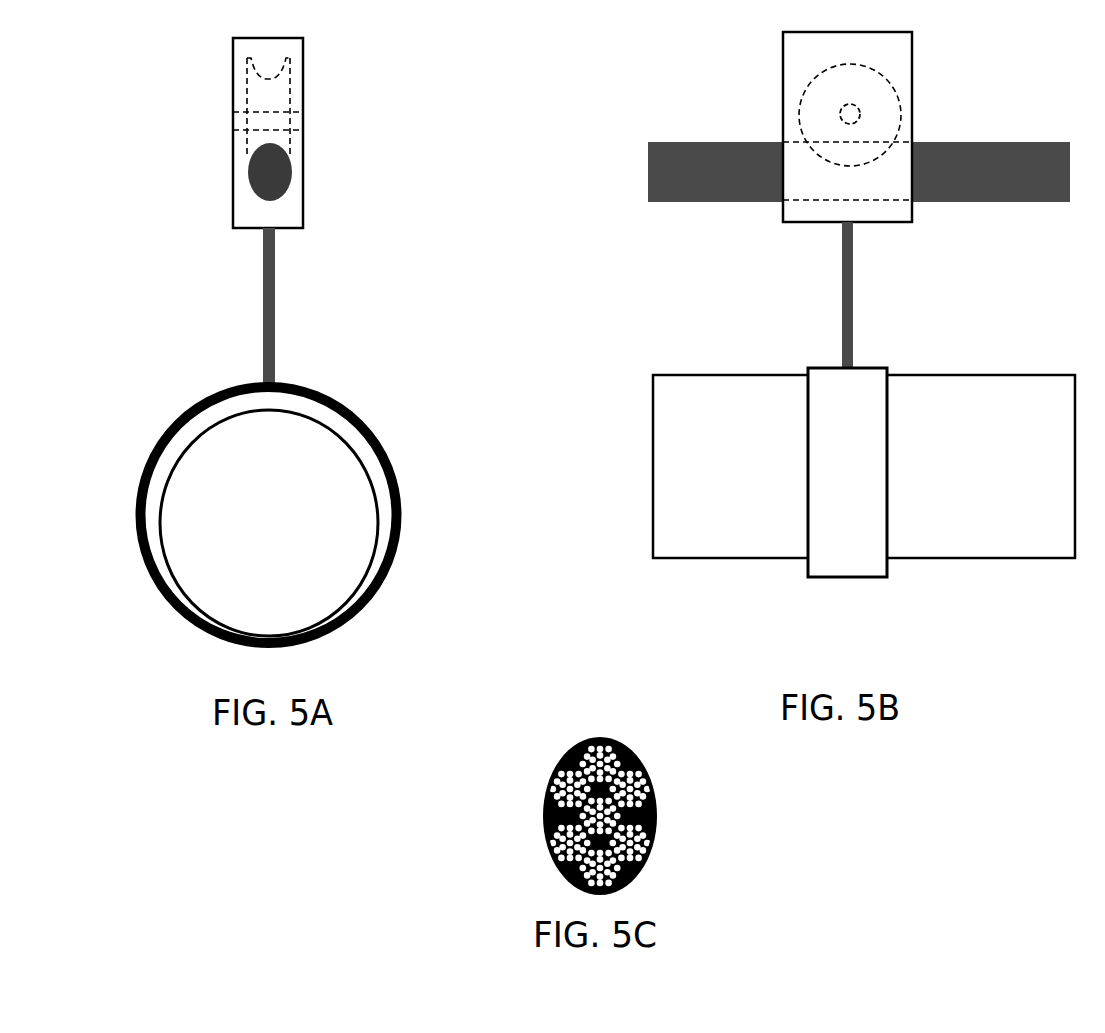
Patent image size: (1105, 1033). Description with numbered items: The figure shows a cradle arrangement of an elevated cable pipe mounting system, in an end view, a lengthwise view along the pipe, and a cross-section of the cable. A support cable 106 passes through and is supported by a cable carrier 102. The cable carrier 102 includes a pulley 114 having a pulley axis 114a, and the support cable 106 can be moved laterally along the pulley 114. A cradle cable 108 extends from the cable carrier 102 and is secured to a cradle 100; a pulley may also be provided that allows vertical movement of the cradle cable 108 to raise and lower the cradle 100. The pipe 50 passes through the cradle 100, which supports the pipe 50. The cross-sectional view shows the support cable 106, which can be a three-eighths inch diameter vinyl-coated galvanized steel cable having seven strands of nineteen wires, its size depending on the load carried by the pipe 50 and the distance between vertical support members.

In FIG. 5A, the pipe 50 is at (190, 448).
In FIG. 5B, the pipe 50 is at (698, 417).
In FIG. 5A, the cradle 100 is at (400, 517).
In FIG. 5B, the cradle 100 is at (828, 550).
In FIG. 5A, the cable carrier 102 is at (233, 179).
In FIG. 5B, the cable carrier 102 is at (783, 97).
In FIG. 5A, the support cable 106 is at (293, 174).
In FIG. 5B, the support cable 106 is at (648, 170).
In FIG. 5C, the support cable 106 is at (543, 817).
In FIG. 5A, the cradle cable 108 is at (275, 310).
In FIG. 5B, the cradle cable 108 is at (840, 293).
In FIG. 5A, the pulley 114 is at (290, 92).
In FIG. 5B, the pulley axis 114a is at (868, 112).